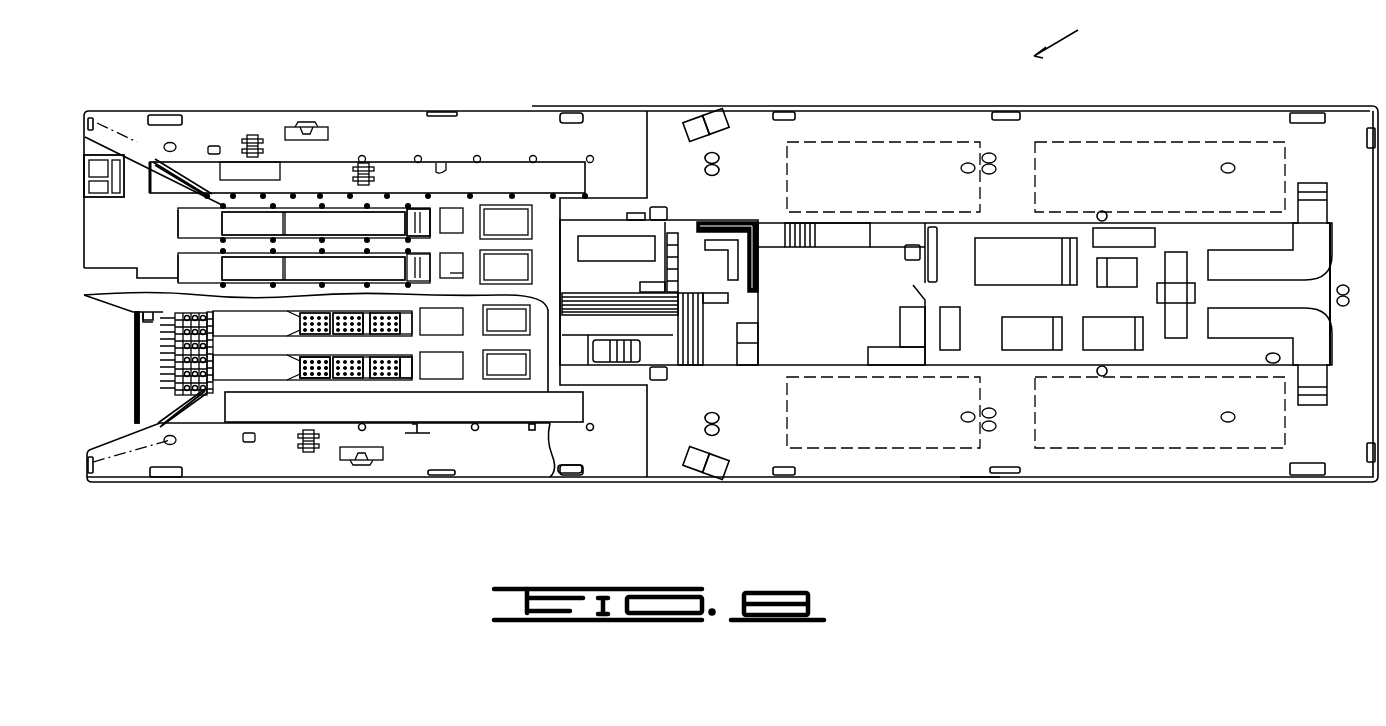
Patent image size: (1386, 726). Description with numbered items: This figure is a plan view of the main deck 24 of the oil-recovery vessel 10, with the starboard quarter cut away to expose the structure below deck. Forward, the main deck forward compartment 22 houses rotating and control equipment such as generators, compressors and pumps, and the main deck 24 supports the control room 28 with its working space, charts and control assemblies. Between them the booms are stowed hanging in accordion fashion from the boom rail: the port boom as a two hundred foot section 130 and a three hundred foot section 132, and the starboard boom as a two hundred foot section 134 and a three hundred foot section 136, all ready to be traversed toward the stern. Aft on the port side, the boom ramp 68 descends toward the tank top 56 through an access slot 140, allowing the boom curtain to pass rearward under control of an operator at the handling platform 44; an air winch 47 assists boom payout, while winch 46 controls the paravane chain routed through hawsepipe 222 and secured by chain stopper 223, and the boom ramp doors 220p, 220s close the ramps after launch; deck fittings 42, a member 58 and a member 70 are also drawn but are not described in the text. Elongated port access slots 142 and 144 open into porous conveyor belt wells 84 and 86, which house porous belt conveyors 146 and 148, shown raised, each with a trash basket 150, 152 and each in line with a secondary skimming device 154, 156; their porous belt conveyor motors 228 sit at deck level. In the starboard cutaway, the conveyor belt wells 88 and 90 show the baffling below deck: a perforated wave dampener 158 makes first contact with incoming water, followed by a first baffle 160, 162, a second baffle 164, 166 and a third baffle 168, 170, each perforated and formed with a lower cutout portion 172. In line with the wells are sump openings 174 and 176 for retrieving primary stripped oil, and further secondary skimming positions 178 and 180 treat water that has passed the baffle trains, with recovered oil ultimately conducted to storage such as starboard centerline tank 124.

The vessel 10 is at (1108, 31).
The main deck forward compartment 22 is at (987, 223).
The main deck 24 is at (482, 122).
The control room 28 is at (682, 220).
The retaining clip 42 is at (305, 125).
The handling platform 44 is at (103, 178).
The winch 46 is at (252, 135).
The air winch 47 is at (365, 163).
The tank top 56 is at (145, 335).
The bracket 58 is at (132, 345).
The boom ramp 68 is at (522, 170).
The support bar 70 is at (503, 418).
The porous conveyor belt well 84 is at (206, 230).
The porous conveyor belt well 86 is at (206, 275).
The conveyor belt well 88 is at (240, 376).
The conveyor belt well 90 is at (240, 332).
The starboard centerline tank 124 is at (968, 462).
The 200 foot boom section 130 is at (873, 140).
The 300 foot boom section 132 is at (1130, 140).
The 200 foot boom section 134 is at (893, 448).
The 300 foot boom section 136 is at (1197, 448).
The access slot 140 is at (440, 165).
The port access slot 142 is at (178, 222).
The port access slot 144 is at (178, 262).
The porous belt conveyor 146 is at (358, 230).
The porous belt conveyor 148 is at (358, 275).
The trash basket 150 is at (448, 207).
The trash basket 152 is at (450, 273).
The secondary skimming device 154 is at (519, 230).
The secondary skimming device 156 is at (519, 275).
The wave dampener 158 is at (168, 352).
The first baffle 160 is at (312, 382).
The first baffle 162 is at (298, 320).
The second baffle 164 is at (346, 382).
The second baffle 166 is at (343, 313).
The third baffle 168 is at (390, 380).
The third baffle 170 is at (390, 317).
The lower cutout portion 172 is at (298, 366).
The sump opening 174 is at (421, 322).
The sump opening 176 is at (421, 366).
The secondary skimming position 178 is at (521, 329).
The secondary skimming position 180 is at (521, 373).
The boom ramp door 220p is at (172, 185).
The boom ramp door 220s is at (170, 410).
The hawsepipe 222 is at (137, 142).
The chain stopper 223 is at (214, 146).
The porous belt conveyor motor 228 is at (428, 177).